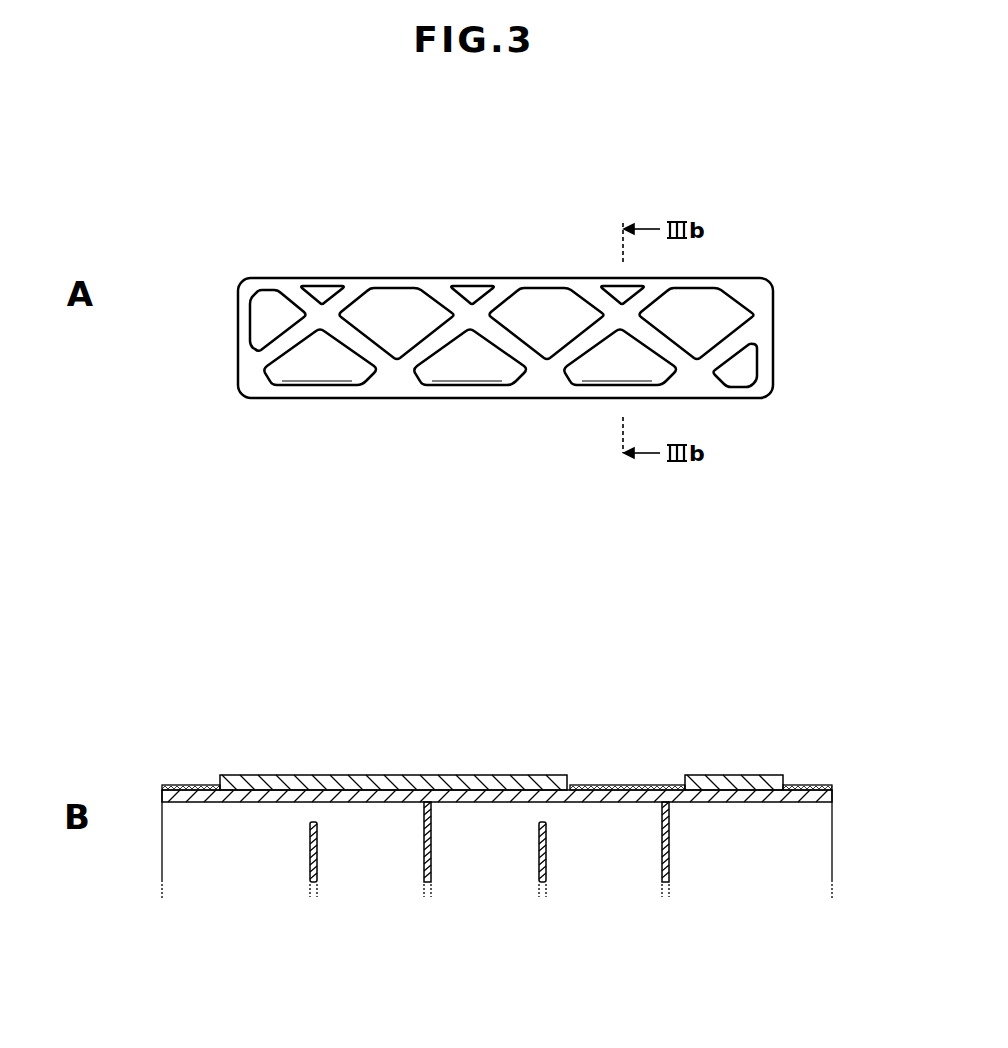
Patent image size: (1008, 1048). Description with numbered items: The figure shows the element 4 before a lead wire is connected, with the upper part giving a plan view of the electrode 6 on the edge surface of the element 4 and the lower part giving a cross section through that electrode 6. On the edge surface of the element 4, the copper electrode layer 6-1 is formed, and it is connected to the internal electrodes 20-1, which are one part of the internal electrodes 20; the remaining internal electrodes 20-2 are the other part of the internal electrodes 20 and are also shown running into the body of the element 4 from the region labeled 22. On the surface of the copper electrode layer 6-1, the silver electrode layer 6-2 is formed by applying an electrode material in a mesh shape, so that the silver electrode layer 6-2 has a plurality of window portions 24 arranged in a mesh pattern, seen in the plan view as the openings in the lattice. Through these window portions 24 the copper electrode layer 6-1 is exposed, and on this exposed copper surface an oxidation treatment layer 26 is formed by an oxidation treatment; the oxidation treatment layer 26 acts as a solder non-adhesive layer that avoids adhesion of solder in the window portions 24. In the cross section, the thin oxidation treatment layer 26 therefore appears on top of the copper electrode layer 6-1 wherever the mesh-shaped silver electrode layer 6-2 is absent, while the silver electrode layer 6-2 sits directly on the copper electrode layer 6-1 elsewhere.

The element 4 is at (775, 335).
The electrode 6 is at (533, 203).
The copper electrode layer 6-1 is at (506, 285).
The silver electrode layer 6-2 is at (396, 285).
The internal electrodes 20 is at (305, 967).
The internal electrodes 20-1 is at (431, 867).
The internal electrodes 20-2 is at (317, 860).
The substrate 22 is at (833, 862).
The window portions 24 is at (527, 358).
The oxidation treatment layer 26 is at (398, 383).